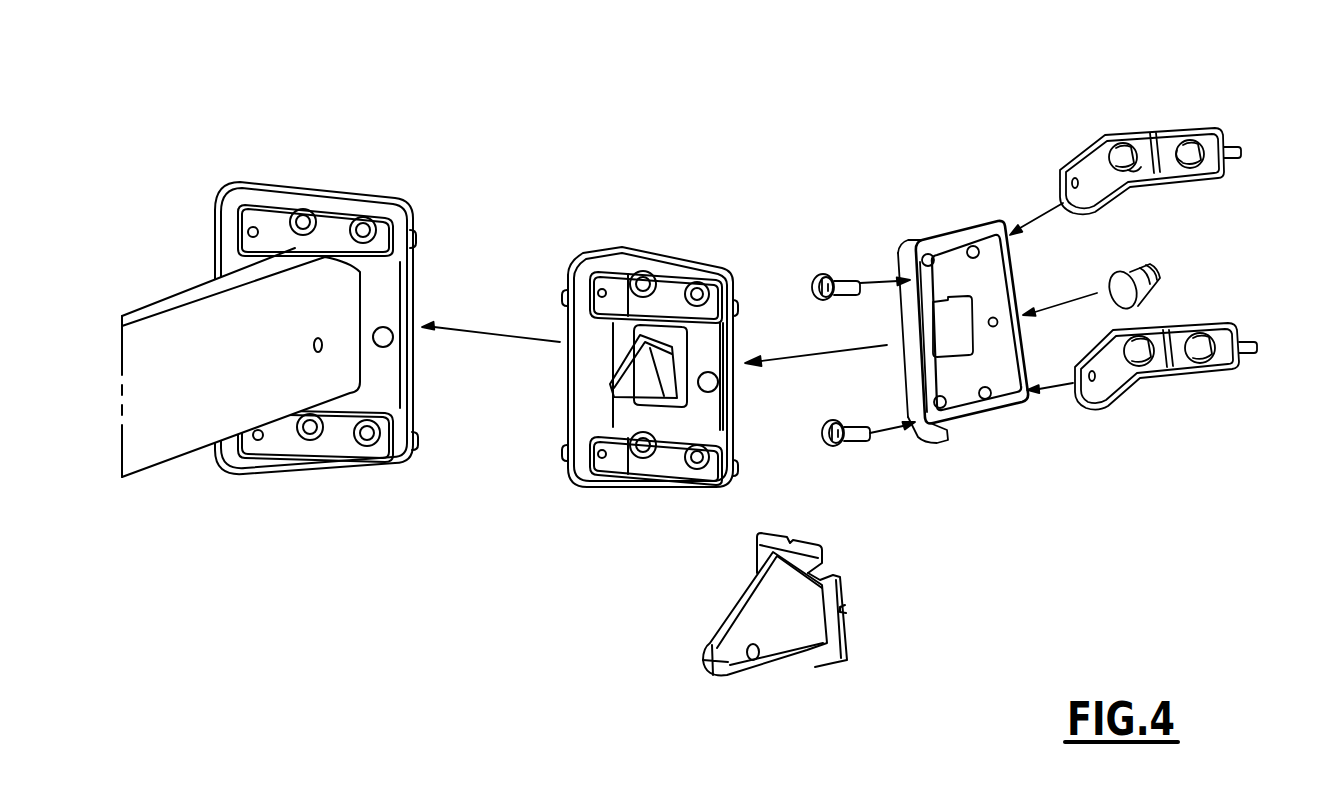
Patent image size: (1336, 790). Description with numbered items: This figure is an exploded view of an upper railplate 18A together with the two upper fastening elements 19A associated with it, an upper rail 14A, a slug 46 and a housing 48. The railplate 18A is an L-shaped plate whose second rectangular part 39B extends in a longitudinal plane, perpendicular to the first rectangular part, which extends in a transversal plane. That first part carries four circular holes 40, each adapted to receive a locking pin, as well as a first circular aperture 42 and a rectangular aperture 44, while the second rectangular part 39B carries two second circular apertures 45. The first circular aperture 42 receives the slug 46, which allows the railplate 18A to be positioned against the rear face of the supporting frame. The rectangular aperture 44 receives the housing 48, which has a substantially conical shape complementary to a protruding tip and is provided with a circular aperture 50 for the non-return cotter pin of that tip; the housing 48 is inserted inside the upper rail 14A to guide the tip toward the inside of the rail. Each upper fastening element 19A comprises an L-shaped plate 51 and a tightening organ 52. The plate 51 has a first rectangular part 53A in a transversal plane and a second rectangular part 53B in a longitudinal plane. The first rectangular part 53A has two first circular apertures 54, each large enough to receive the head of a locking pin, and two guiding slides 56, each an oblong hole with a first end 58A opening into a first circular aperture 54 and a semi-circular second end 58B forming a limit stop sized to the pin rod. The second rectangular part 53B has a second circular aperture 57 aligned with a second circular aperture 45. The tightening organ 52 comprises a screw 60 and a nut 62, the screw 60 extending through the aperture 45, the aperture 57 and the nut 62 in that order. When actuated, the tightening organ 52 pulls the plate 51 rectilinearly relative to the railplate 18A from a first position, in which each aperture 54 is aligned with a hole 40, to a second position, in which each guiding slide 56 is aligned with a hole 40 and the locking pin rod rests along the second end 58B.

The upper rail 14A is at (237, 322).
The upper railplate 18A is at (959, 300).
The upper fastening element 19A is at (1166, 240).
The second rectangular part 39B is at (912, 358).
The circular holes 40 is at (973, 246).
The first circular aperture 42 is at (997, 323).
The rectangular aperture 44 is at (932, 316).
The second circular aperture 45 is at (893, 253).
The slug 46 is at (1150, 284).
The housing 48 is at (791, 634).
The circular aperture 50 is at (756, 661).
The L-shaped plate 51 is at (1105, 133).
The tightening organ 52 is at (792, 267).
The first rectangular part 53A is at (1185, 358).
The second rectangular part 53B is at (1107, 373).
The first circular apertures 54 is at (1184, 143).
The guiding slides 56 is at (1125, 153).
The second circular aperture 57 is at (1068, 180).
The first end 58A is at (1138, 170).
The second end 58B is at (1160, 152).
The screw 60 is at (843, 281).
The nut 62 is at (598, 287).